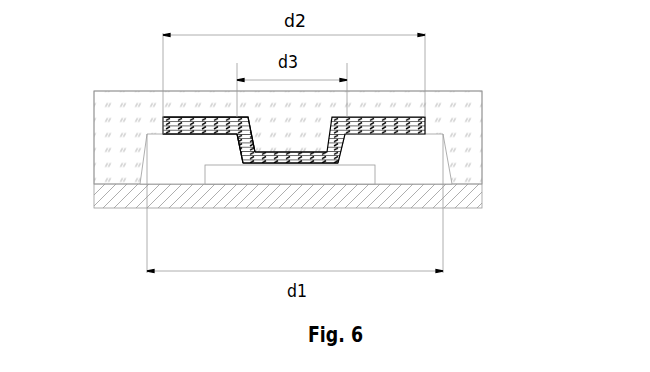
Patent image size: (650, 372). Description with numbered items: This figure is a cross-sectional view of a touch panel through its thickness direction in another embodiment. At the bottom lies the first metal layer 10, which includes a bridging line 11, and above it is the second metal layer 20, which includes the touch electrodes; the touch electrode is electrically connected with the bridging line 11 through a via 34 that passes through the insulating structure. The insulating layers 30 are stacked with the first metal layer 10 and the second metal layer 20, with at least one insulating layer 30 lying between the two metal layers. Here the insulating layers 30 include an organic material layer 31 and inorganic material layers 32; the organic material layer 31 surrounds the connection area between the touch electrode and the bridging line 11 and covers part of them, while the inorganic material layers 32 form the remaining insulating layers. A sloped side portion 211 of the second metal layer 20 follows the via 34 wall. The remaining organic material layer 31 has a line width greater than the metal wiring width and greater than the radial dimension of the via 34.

The second metal layer 20 is at (293, 94).
The side portion of electrode 211 is at (166, 116).
The via 34 is at (243, 150).
The insulating layer 30 is at (345, 136).
The organic material layer 31 is at (445, 143).
The inorganic material layer 32 is at (455, 91).
The first metal layer 10 is at (398, 167).
The bridging line 11 is at (375, 177).